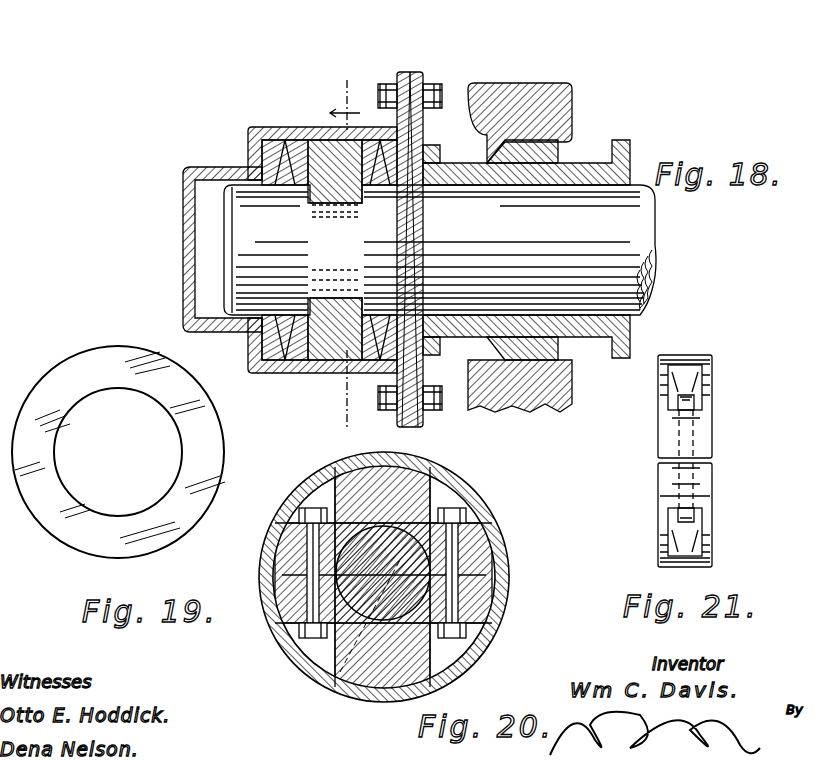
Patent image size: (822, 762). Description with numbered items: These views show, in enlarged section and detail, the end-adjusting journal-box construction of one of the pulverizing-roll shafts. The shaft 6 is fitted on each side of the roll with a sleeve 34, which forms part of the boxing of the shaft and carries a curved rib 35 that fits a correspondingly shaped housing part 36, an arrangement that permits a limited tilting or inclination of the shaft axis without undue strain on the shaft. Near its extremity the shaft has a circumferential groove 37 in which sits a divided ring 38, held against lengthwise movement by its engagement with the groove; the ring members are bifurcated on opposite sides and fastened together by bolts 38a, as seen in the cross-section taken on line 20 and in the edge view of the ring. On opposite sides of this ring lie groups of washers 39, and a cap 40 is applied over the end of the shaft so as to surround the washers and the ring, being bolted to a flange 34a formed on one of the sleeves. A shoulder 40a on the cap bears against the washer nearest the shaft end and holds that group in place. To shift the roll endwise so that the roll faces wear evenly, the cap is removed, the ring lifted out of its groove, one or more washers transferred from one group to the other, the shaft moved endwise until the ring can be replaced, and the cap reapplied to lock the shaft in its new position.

In FIG. 18, the shaft 6 is at (440, 250).
In FIG. 18, the section line 20 is at (347, 88).
In FIG. 18, the sleeve 34 is at (593, 163).
In FIG. 18, the flange 34a is at (424, 79).
In FIG. 18, the curved rib 35 is at (567, 117).
In FIG. 18, the housing part 36 is at (537, 88).
In FIG. 18, the circumferential groove 37 is at (363, 226).
In FIG. 20, the circumferential groove 37 is at (322, 682).
In FIG. 18, the divided ring 38 is at (358, 140).
In FIG. 20, the divided ring 38 is at (428, 490).
In FIG. 21, the divided ring 38 is at (713, 438).
In FIG. 20, the bolts 38a is at (527, 540).
In FIG. 21, the bolts 38a is at (697, 430).
In FIG. 18, the washers 39 is at (292, 140).
In FIG. 19, the washers 39 is at (118, 388).
In FIG. 18, the cap 40 is at (268, 127).
In FIG. 20, the cap 40 is at (490, 523).
In FIG. 18, the cap shoulder 40a is at (248, 154).